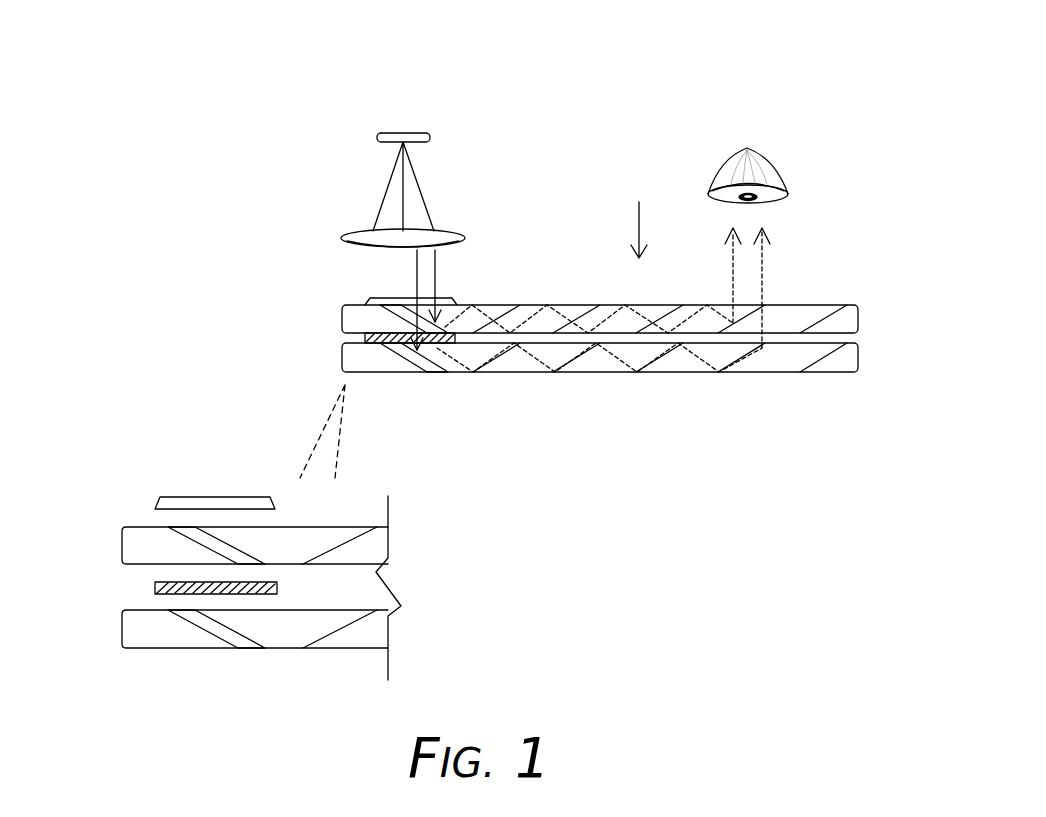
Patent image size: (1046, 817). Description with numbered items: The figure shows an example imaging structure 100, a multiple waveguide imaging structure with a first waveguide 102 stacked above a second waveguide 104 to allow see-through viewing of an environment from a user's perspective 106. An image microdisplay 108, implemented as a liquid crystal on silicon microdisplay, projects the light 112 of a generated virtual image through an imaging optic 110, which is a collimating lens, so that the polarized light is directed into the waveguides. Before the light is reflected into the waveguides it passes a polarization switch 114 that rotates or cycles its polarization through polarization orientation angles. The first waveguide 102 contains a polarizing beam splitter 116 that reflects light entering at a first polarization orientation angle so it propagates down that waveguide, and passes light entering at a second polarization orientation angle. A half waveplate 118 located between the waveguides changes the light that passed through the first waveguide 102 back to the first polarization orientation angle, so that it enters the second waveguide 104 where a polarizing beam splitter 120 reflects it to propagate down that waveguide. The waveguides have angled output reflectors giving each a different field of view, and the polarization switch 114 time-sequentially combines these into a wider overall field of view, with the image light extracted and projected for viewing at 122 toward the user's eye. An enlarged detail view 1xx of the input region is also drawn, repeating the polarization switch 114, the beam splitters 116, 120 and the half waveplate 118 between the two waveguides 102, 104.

The imaging structure 100 is at (703, 80).
The first waveguide 102 is at (795, 305).
The second waveguide 104 is at (788, 372).
The perspective 106 is at (657, 189).
The image microdisplay 108 is at (387, 133).
The imaging optic 110 is at (357, 230).
The light 112 is at (425, 195).
The polarization switch 114 is at (381, 302).
The polarizing beam splitter 116 is at (393, 312).
The half waveplate 118 is at (373, 337).
The polarizing beam splitter 120 is at (412, 352).
The image light for viewing 122 is at (719, 271).
The detail view 1xx is at (197, 363).